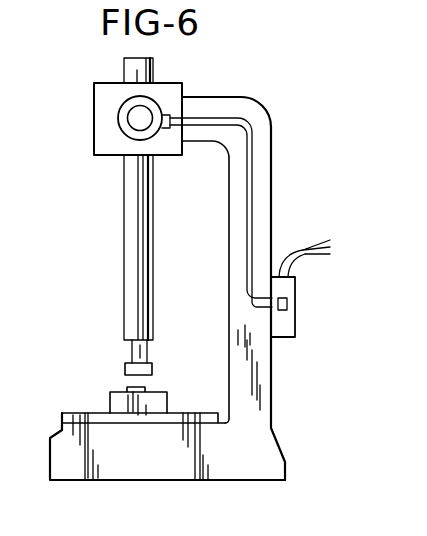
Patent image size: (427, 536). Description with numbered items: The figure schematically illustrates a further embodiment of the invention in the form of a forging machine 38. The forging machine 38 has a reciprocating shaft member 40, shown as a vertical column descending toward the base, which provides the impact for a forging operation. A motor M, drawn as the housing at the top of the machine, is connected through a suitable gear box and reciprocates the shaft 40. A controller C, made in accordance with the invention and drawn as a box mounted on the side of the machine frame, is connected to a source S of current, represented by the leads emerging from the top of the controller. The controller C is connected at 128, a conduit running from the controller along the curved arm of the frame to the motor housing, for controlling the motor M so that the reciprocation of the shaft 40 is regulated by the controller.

The motor M is at (153, 100).
The forging machine 38 is at (272, 125).
The controller connection 128 is at (253, 182).
The reciprocating shaft member 40 is at (122, 273).
The source of current S is at (335, 230).
The controller C is at (295, 317).